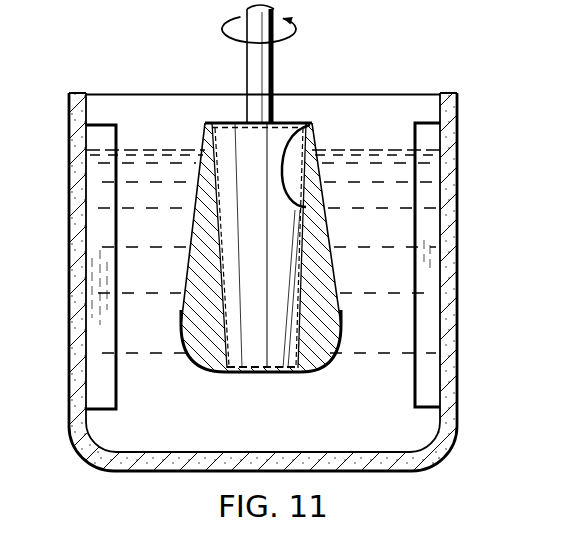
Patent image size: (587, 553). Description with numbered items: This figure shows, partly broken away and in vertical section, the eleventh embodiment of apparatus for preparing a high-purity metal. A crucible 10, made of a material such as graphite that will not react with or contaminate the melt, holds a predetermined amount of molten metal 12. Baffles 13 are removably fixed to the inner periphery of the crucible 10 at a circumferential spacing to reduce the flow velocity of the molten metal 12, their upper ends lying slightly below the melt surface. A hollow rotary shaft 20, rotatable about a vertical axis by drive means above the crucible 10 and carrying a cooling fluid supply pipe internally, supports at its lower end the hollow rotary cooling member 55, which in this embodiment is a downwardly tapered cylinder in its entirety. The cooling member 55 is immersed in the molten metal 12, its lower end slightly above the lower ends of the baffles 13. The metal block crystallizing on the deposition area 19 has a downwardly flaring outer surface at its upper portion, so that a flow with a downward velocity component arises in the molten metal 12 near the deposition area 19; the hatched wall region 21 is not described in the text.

The crucible 10 is at (459, 303).
The molten metal 12 is at (398, 423).
The baffles 13 is at (100, 373).
The deposition area 19 is at (215, 291).
The hollow rotary shaft 20 is at (262, 68).
The crucible wall 21 is at (332, 308).
The hollow rotary cooling member 55 is at (284, 375).